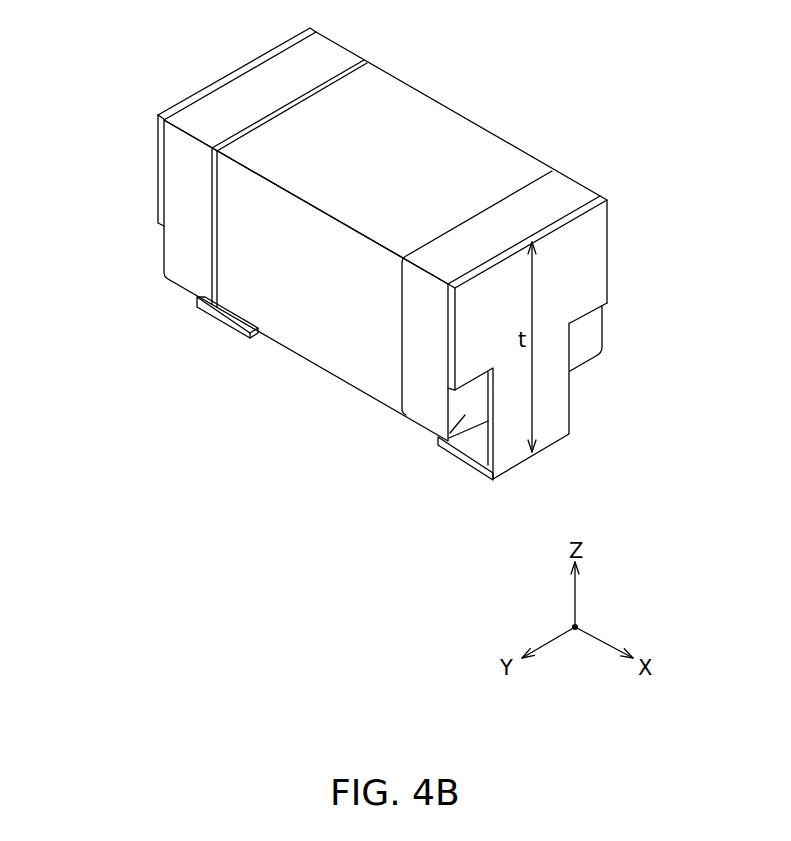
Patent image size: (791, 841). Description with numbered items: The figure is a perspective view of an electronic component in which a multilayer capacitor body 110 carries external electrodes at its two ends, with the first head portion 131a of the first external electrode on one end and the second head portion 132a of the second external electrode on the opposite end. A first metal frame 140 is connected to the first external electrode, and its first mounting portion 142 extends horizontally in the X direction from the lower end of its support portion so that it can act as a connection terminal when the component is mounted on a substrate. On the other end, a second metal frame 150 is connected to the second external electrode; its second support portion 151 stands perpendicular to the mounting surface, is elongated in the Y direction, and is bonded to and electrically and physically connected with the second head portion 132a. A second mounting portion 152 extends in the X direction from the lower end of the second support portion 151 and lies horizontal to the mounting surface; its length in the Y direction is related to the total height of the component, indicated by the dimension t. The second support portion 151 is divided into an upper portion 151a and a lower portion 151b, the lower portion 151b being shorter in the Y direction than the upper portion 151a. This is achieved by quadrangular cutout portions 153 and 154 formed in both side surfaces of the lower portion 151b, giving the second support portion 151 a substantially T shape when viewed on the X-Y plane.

The capacitor body 110 is at (432, 133).
The first head portion 131a is at (164, 248).
The second head portion 132a is at (441, 440).
The first metal frame 140 is at (229, 65).
The first mounting portion 142 is at (208, 313).
The second metal frame 150 is at (528, 330).
The second support portion 151 is at (595, 337).
The upper portion 151a is at (587, 278).
The lower portion 151b is at (558, 397).
The second mounting portion 152 is at (480, 448).
The cutout portion 153 is at (583, 328).
The cutout portion 154 is at (488, 392).